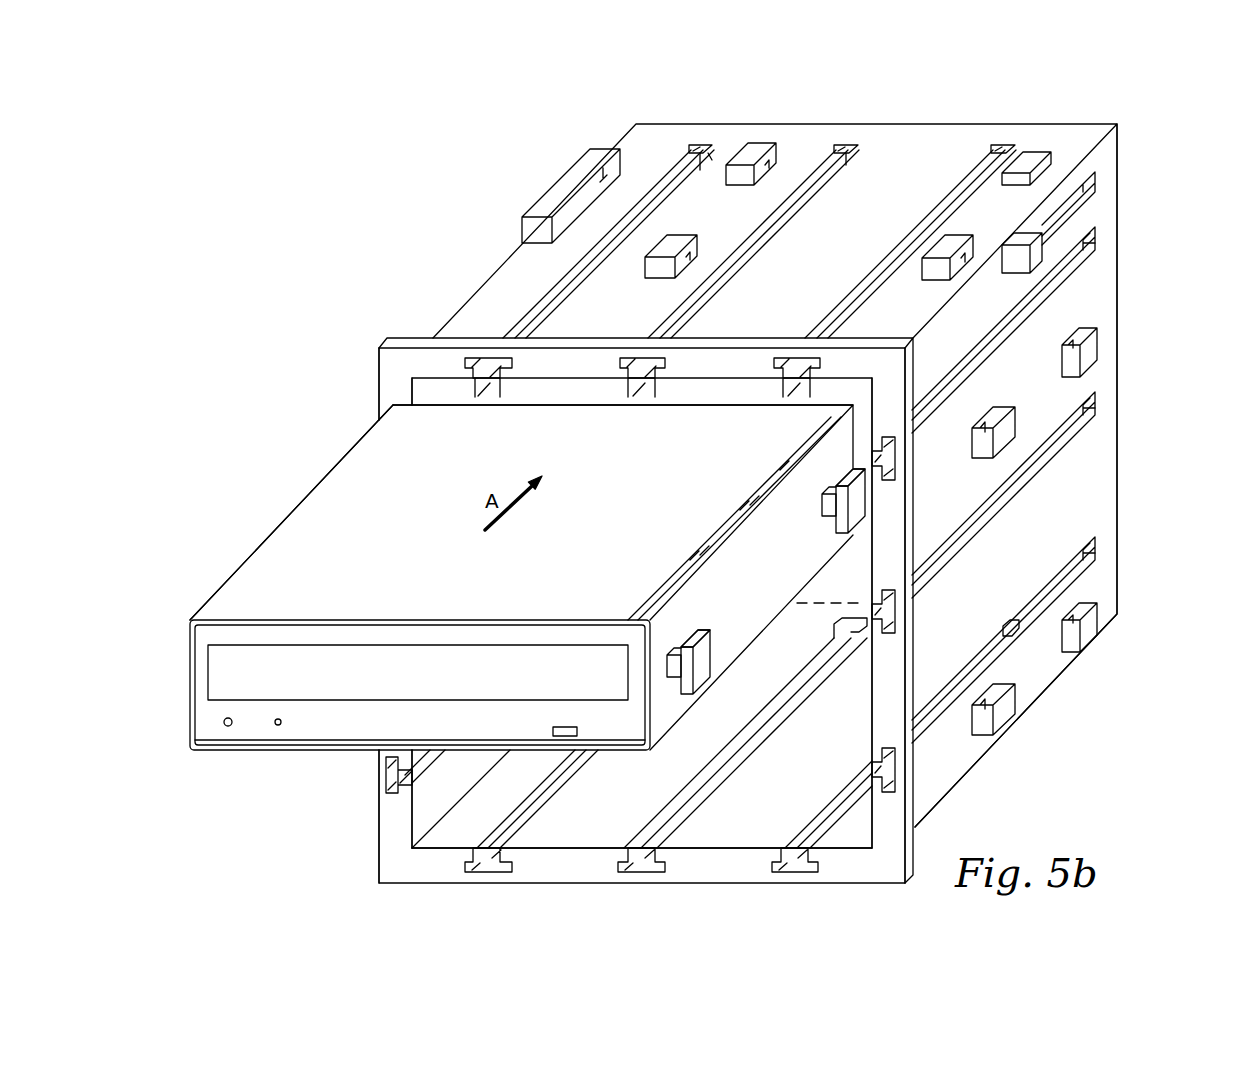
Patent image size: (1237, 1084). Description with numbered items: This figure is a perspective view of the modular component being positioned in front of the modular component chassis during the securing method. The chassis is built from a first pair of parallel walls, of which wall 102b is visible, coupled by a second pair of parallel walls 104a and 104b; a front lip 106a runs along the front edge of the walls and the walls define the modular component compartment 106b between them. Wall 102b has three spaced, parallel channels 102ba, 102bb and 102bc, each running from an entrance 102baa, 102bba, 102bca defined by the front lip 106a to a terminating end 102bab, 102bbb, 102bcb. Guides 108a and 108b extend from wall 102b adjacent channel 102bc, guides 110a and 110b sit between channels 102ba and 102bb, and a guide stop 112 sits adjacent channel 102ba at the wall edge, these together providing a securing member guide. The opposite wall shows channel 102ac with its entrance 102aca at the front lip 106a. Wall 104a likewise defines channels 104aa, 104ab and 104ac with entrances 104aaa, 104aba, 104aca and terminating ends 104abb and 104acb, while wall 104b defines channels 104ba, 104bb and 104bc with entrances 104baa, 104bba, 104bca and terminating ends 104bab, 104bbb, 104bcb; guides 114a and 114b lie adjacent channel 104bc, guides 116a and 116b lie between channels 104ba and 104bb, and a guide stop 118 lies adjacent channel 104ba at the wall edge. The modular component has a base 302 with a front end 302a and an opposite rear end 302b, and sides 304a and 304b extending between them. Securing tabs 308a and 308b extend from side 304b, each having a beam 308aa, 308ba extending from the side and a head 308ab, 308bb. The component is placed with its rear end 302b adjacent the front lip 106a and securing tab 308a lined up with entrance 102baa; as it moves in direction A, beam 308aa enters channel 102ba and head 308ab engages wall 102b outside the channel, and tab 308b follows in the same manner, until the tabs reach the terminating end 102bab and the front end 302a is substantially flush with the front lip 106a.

The channel 102ac is at (440, 760).
The entrance 102aca is at (388, 777).
The wall 102b is at (1105, 448).
The channel 102ba is at (1082, 268).
The entrance 102baa is at (898, 458).
The terminating end 102bab is at (1096, 242).
The channel 102bb is at (1075, 440).
The entrance 102bba is at (880, 608).
The terminating end 102bbb is at (1096, 396).
The channel 102bc is at (933, 730).
The entrance 102bca is at (882, 768).
The terminating end 102bcb is at (1096, 549).
The wall 104a is at (707, 838).
The channel 104aa is at (548, 770).
The entrance 104aaa is at (488, 873).
The channel 104ab is at (664, 812).
The entrance 104aba is at (639, 873).
The terminating end 104abb is at (855, 640).
The channel 104ac is at (816, 818).
The entrance 104aca is at (794, 873).
The terminating end 104acb is at (1008, 620).
The wall 104b is at (513, 272).
The channel 104ba is at (690, 147).
The entrance 104baa is at (488, 356).
The terminating end 104bab is at (706, 168).
The channel 104bb is at (845, 147).
The entrance 104bba is at (641, 356).
The terminating end 104bbb is at (858, 158).
The channel 104bc is at (963, 182).
The entrance 104bca is at (796, 356).
The terminating end 104bcb is at (1003, 146).
The front lip 106a is at (380, 392).
The modular component compartment 106b is at (915, 548).
The guide 108a is at (1010, 700).
The guide 108b is at (1097, 625).
The guide 110a is at (985, 460).
The guide 110b is at (1096, 345).
The guide stop 112 is at (1092, 190).
The guide 114a is at (935, 258).
The guide 114b is at (1040, 160).
The guide 116a is at (700, 258).
The guide 116b is at (752, 160).
The guide stop 118 is at (574, 182).
The base 302 is at (406, 565).
The front end 302a is at (260, 742).
The rear end 302b is at (562, 400).
The side 304a is at (298, 508).
The side 304b is at (768, 482).
The securing tab 308a is at (828, 485).
The beam 308aa is at (826, 512).
The head 308ab is at (836, 477).
The securing tab 308b is at (672, 640).
The beam 308ba is at (668, 675).
The head 308bb is at (681, 643).